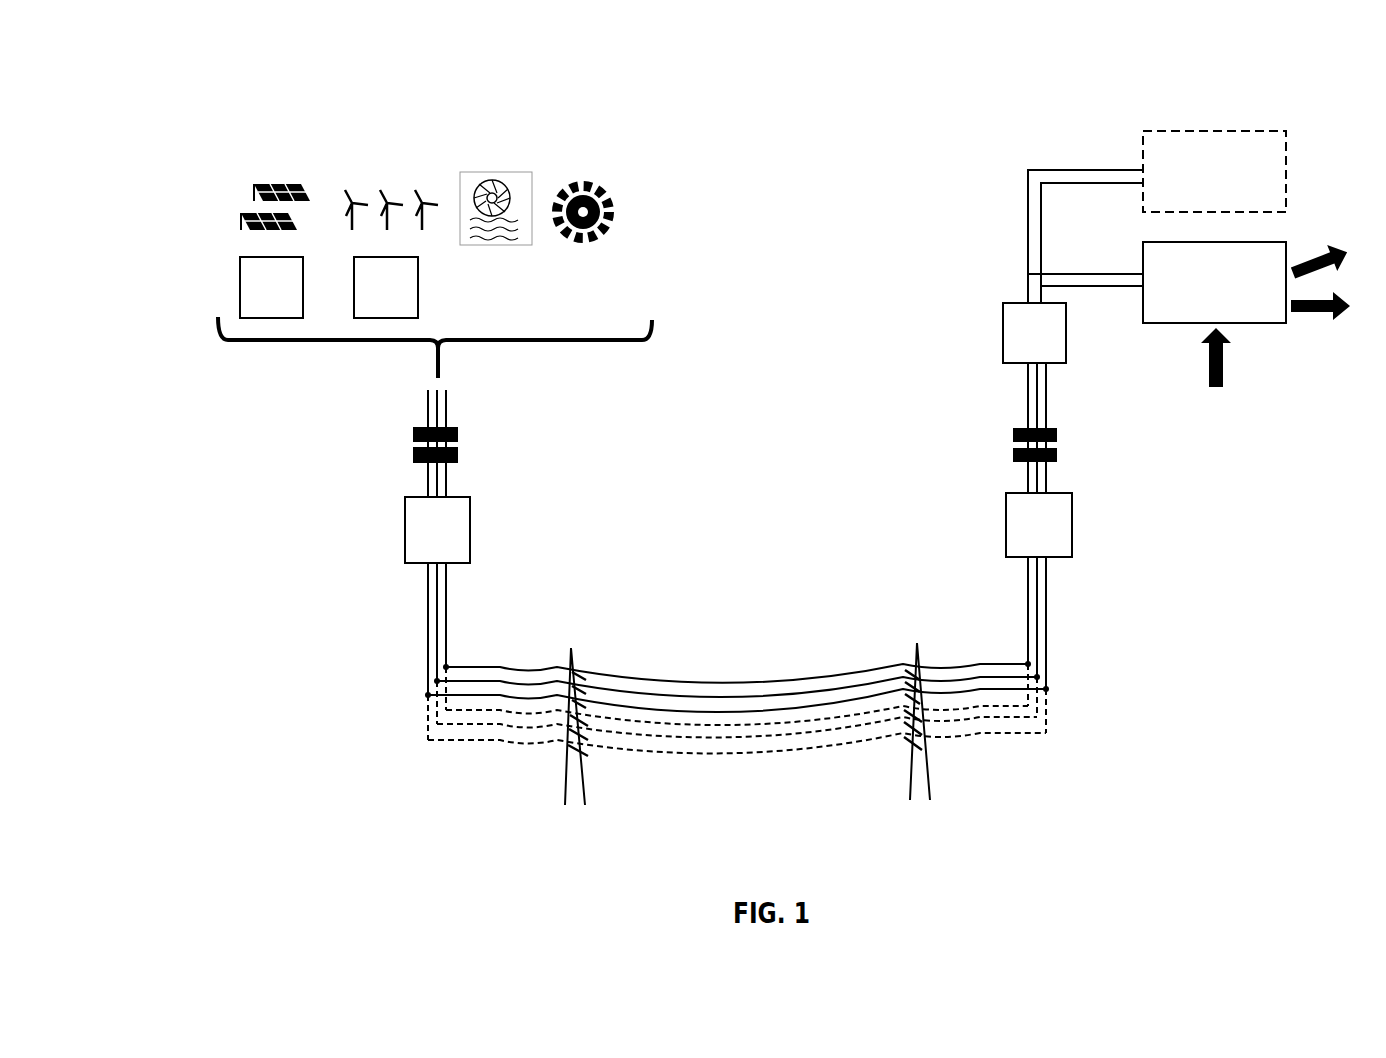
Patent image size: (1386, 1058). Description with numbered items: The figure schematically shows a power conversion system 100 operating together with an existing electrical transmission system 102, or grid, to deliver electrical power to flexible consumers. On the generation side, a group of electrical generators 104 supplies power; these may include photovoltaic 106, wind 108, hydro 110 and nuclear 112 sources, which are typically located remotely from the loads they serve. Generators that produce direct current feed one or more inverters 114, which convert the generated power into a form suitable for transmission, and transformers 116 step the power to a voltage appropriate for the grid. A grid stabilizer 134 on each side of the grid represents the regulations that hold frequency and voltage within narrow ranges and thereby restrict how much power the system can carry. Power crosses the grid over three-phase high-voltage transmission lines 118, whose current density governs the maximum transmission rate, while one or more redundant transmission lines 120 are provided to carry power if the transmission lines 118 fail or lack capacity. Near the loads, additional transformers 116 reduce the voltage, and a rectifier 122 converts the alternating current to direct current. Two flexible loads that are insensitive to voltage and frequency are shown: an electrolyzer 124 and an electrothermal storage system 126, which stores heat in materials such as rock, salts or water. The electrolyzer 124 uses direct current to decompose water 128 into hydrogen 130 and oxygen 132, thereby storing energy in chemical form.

The power conversion system 100 is at (962, 88).
The electrical transmission system 102 is at (722, 644).
The electrical generator 104 is at (305, 133).
The photovoltaic generator 106 is at (253, 192).
The wind generator 108 is at (388, 200).
The hydro generator 110 is at (527, 190).
The nuclear generator 112 is at (605, 228).
The inverter 114 is at (255, 292).
The transformer 116 is at (413, 455).
The transmission lines 118 is at (880, 668).
The redundant transmission lines 120 is at (757, 768).
The rectifier 122 is at (1012, 335).
The electrolyzer 124 is at (1233, 297).
The electrothermal storage system 126 is at (1233, 182).
The water 128 is at (1222, 368).
The hydrogen 130 is at (1313, 315).
The oxygen 132 is at (1335, 250).
The grid stabilizer 134 is at (418, 533).